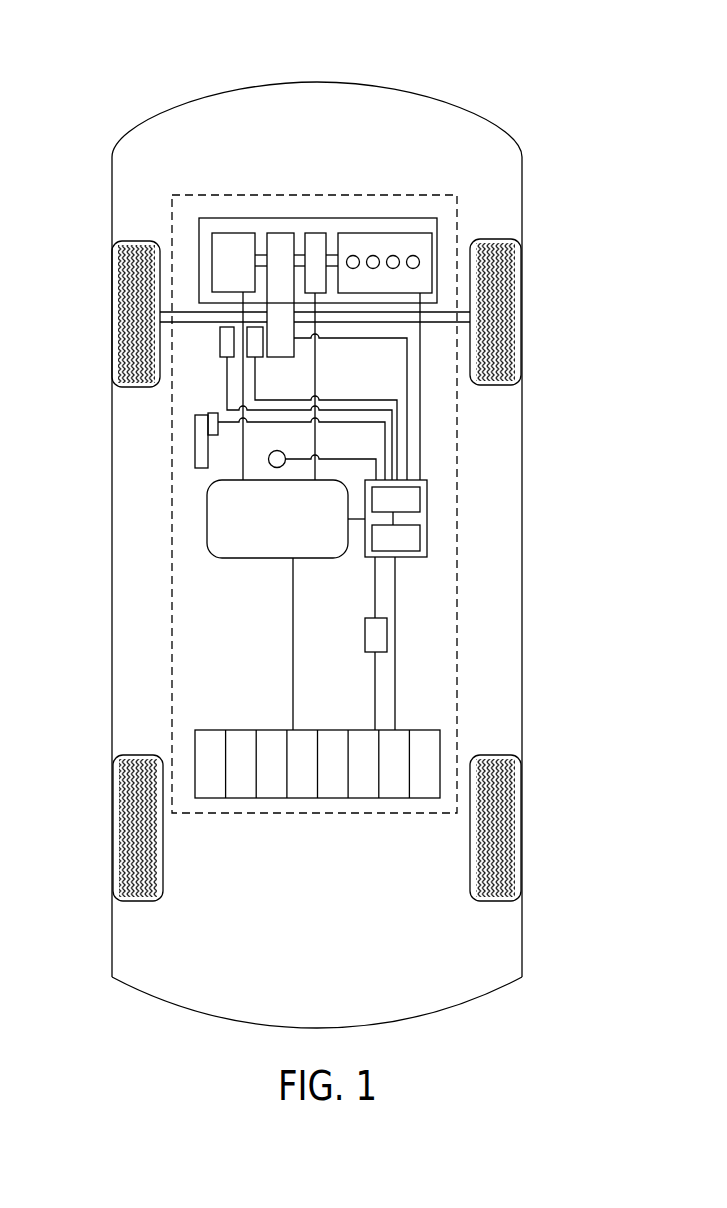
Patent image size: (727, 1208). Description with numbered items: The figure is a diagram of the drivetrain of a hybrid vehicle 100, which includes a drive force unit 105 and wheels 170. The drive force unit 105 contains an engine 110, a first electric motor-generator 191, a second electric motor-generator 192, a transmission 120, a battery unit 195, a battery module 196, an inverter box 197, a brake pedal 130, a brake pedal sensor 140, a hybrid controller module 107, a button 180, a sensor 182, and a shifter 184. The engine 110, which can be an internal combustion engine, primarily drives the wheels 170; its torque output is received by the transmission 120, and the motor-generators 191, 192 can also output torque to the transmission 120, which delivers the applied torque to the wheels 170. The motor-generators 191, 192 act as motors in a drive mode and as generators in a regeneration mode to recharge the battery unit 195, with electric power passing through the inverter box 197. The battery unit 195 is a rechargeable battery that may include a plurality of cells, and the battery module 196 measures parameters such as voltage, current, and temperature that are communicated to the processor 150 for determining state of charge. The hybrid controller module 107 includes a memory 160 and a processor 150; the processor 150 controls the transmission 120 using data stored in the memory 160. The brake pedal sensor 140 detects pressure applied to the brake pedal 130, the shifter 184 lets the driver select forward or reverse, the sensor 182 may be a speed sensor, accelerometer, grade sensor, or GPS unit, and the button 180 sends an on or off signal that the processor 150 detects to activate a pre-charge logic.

The hybrid vehicle 100 is at (72, 53).
The drive force unit 105 is at (172, 520).
The hybrid controller module 107 is at (407, 558).
The engine 110 is at (382, 233).
The transmission 120 is at (280, 233).
The brake pedal 130 is at (199, 447).
The brake pedal sensor 140 is at (212, 415).
The processor 150 is at (422, 500).
The memory 160 is at (422, 538).
The wheels 170 is at (116, 318).
The button 180 is at (285, 455).
The sensor 182 is at (254, 352).
The shifter 184 is at (222, 351).
The electric motor-generator 191 is at (233, 233).
The electric motor-generator 192 is at (315, 233).
The battery unit 195 is at (243, 730).
The battery module 196 is at (365, 637).
The inverter box 197 is at (258, 560).